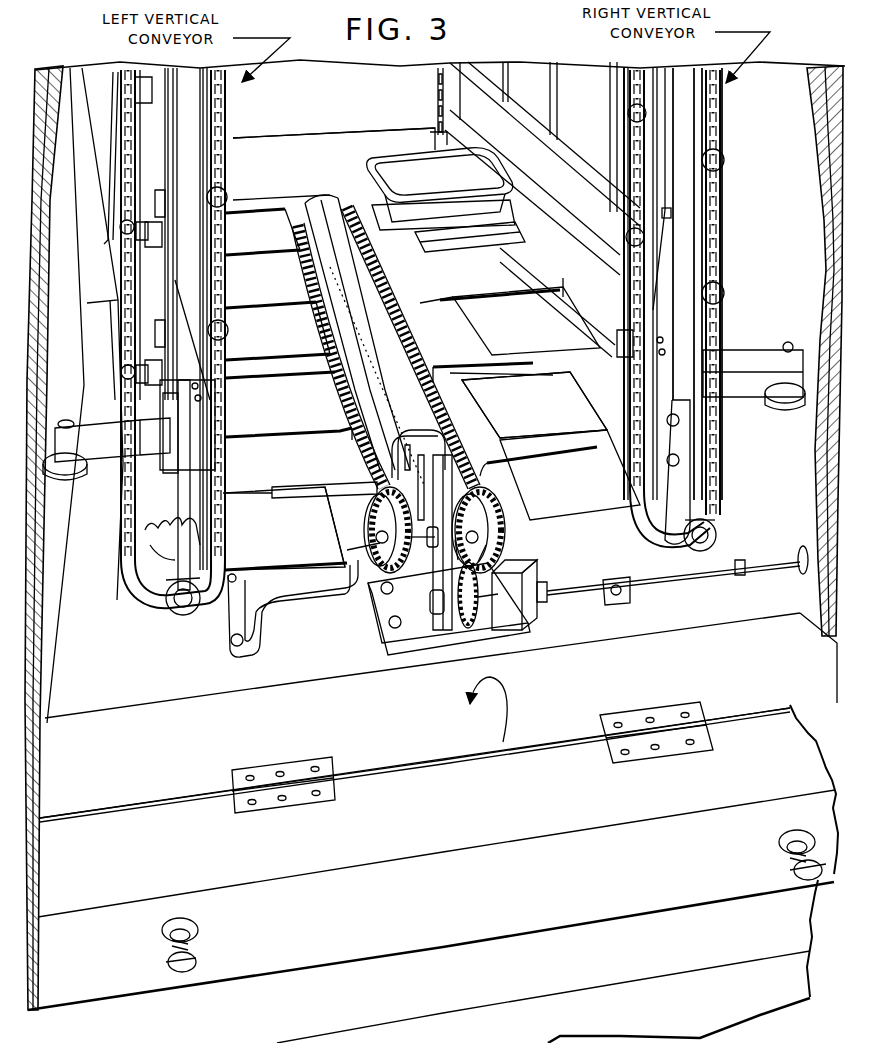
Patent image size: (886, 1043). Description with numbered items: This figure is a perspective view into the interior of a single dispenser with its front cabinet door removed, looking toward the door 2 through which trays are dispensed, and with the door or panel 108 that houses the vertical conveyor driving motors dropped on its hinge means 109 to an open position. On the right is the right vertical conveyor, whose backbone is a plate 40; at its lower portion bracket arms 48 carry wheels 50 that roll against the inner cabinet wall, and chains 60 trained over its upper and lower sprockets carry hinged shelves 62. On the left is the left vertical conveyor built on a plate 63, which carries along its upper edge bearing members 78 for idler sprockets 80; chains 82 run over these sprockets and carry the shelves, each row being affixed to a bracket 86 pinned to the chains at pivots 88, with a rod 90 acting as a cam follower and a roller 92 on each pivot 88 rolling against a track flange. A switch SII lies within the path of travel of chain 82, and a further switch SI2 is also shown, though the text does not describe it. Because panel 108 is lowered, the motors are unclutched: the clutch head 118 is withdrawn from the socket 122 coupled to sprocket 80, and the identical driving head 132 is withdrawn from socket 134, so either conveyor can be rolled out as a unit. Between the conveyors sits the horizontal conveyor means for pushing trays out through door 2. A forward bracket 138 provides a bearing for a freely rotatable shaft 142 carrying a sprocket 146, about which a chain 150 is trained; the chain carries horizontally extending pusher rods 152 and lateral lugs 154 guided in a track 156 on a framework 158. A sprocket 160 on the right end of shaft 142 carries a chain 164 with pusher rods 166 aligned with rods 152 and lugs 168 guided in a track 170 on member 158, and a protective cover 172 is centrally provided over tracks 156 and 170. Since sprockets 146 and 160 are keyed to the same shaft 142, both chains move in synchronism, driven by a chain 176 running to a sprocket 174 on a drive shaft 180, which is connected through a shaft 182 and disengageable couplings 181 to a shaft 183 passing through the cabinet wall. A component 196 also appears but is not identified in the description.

The door 2 is at (306, 170).
The plate 40 is at (700, 204).
The bracket arms 48 is at (735, 352).
The wheels 50 is at (790, 400).
The chains 60 is at (718, 122).
The shelves 62 is at (445, 272).
The plate 63 is at (173, 130).
The bearing members 78 is at (180, 497).
The idler sprockets 80 is at (170, 526).
The chains 82 is at (126, 264).
The bracket 86 is at (149, 307).
The pivot pins 88 is at (134, 232).
The rod 90 is at (162, 200).
The roller 92 is at (208, 192).
The door or panel 108 is at (650, 801).
The hinge means 109 is at (312, 768).
The clutch head 118 is at (200, 950).
The socket 122 is at (178, 616).
The driving head 132 is at (790, 866).
The socket 134 is at (708, 548).
The forward bracket 138 is at (450, 625).
The shaft 142 is at (430, 580).
The sprocket 146 is at (366, 520).
The chain 150 is at (318, 338).
The pusher rods 152 is at (272, 506).
The lugs 154 is at (415, 510).
The track 156 is at (392, 440).
The framework 158 is at (415, 455).
The sprocket 160 is at (512, 512).
The chain 164 is at (422, 345).
The pusher rods 166 is at (596, 450).
The lugs 168 is at (500, 436).
The track 170 is at (436, 436).
The protective cover 172 is at (318, 235).
The sprocket 174 is at (478, 618).
The chain 176 is at (500, 572).
The drive shaft 180 is at (500, 600).
The disengageable couplings 181 is at (548, 595).
The shaft 182 is at (672, 582).
The shaft 183 is at (758, 555).
The support bracket 196 is at (302, 616).
The switch SII is at (222, 398).
The switch SI2 is at (618, 345).